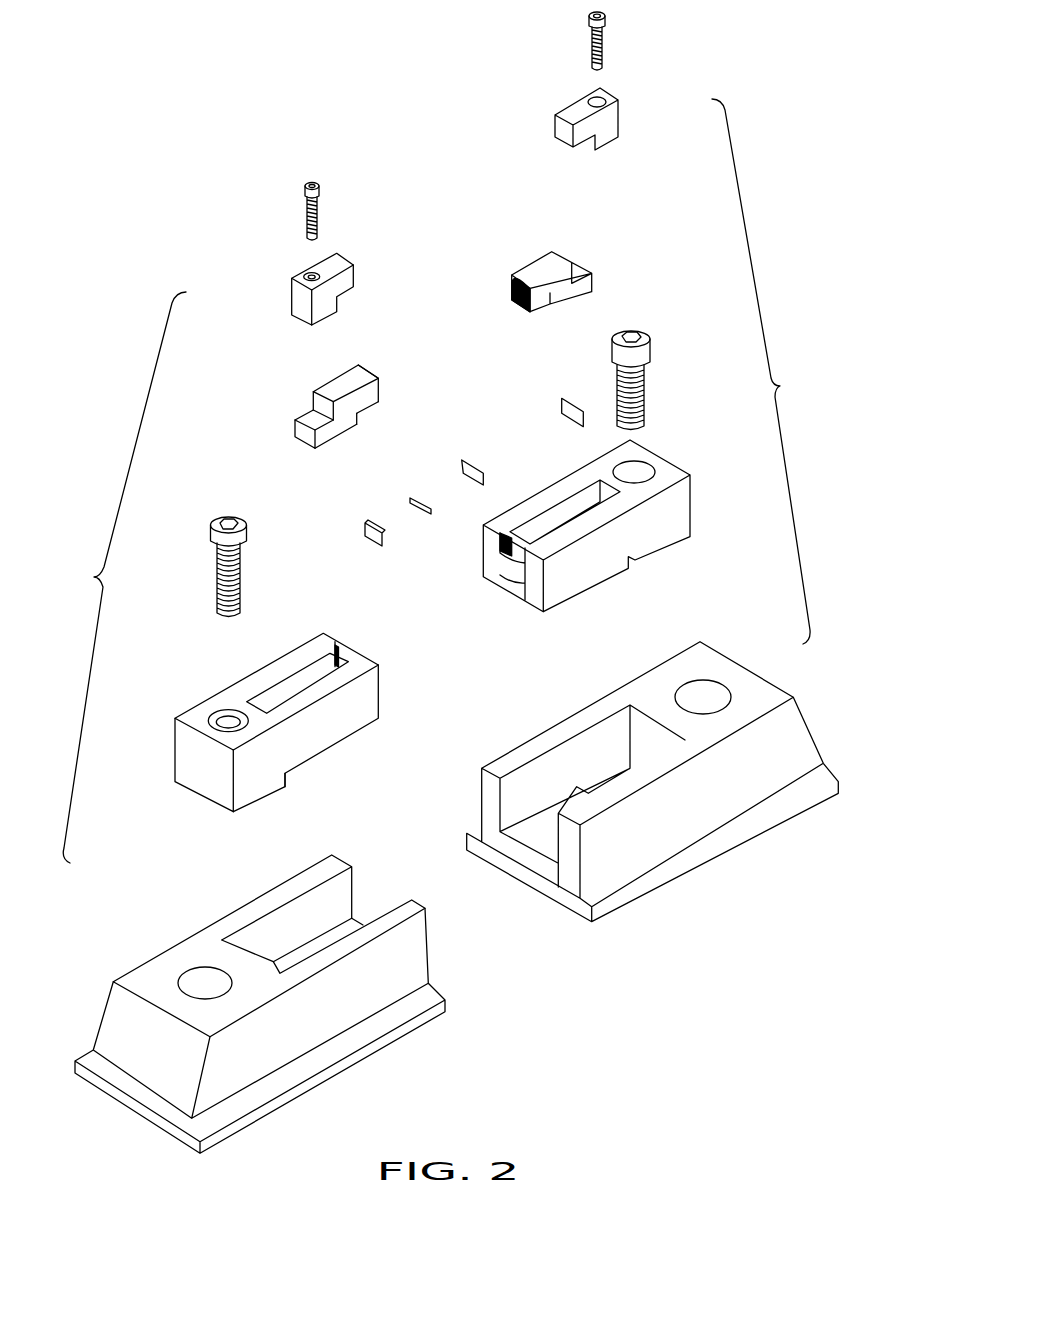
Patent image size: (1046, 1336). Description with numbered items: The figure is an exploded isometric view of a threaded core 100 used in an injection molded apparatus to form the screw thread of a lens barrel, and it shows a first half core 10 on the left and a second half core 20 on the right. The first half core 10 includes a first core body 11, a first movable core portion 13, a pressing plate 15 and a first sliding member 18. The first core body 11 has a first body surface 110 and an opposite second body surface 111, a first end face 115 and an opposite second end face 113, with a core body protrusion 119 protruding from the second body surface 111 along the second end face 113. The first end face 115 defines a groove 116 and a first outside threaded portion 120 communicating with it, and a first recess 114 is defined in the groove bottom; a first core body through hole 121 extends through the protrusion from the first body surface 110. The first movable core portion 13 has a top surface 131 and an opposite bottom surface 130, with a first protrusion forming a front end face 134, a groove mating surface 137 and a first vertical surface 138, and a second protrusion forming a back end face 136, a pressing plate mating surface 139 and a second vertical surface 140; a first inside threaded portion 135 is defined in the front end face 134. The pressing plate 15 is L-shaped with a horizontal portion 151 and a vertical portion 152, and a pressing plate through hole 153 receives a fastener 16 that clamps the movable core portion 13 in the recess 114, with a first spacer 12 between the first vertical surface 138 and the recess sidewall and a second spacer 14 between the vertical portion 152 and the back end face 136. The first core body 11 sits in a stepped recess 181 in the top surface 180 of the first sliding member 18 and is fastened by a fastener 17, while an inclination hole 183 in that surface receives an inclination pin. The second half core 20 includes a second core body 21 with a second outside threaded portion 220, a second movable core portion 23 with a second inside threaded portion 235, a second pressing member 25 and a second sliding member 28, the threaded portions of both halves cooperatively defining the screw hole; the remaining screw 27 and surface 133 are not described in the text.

The threaded core 100 is at (375, 121).
The first half core 10 is at (124, 577).
The second half core 20 is at (761, 371).
The first core body 11 is at (278, 708).
The first spacer 12 is at (410, 503).
The first movable core portion 13 is at (316, 411).
The second spacer 14 is at (365, 527).
The pressing plate 15 is at (302, 286).
The fastener 16 is at (305, 182).
The fastener 17 is at (238, 543).
The first sliding member 18 is at (260, 997).
The second core body 21 is at (598, 526).
The second movable core portion 23 is at (584, 282).
The second pressing member 25 is at (626, 120).
The fastening screw 27 is at (644, 378).
The second sliding member 28 is at (716, 641).
The first body surface 110 is at (262, 680).
The second body surface 111 is at (313, 763).
The second end face 113 is at (212, 768).
The first recess 114 is at (292, 687).
The first end face 115 is at (333, 633).
The groove 116 is at (347, 655).
The core body protrusion 119 is at (263, 790).
The first outside threaded portion 120 is at (340, 648).
The first core body through hole 121 is at (223, 718).
The bottom surface 130 is at (334, 443).
The top surface 131 is at (345, 382).
The first side surface 133 is at (312, 408).
The front end face 134 is at (362, 371).
The first inside threaded portion 135 is at (378, 384).
The back end face 136 is at (310, 438).
The groove mating surface 137 is at (374, 408).
The first vertical surface 138 is at (362, 422).
The pressing plate mating surface 139 is at (310, 421).
The second vertical surface 140 is at (313, 412).
The horizontal portion 151 is at (345, 282).
The vertical portion 152 is at (318, 313).
The pressing plate through hole 153 is at (308, 273).
The top surface 180 is at (195, 957).
The stepped recess 181 is at (310, 920).
The inclination hole 183 is at (202, 983).
The second outside threaded portion 220 is at (483, 567).
The second inside threaded portion 235 is at (510, 286).